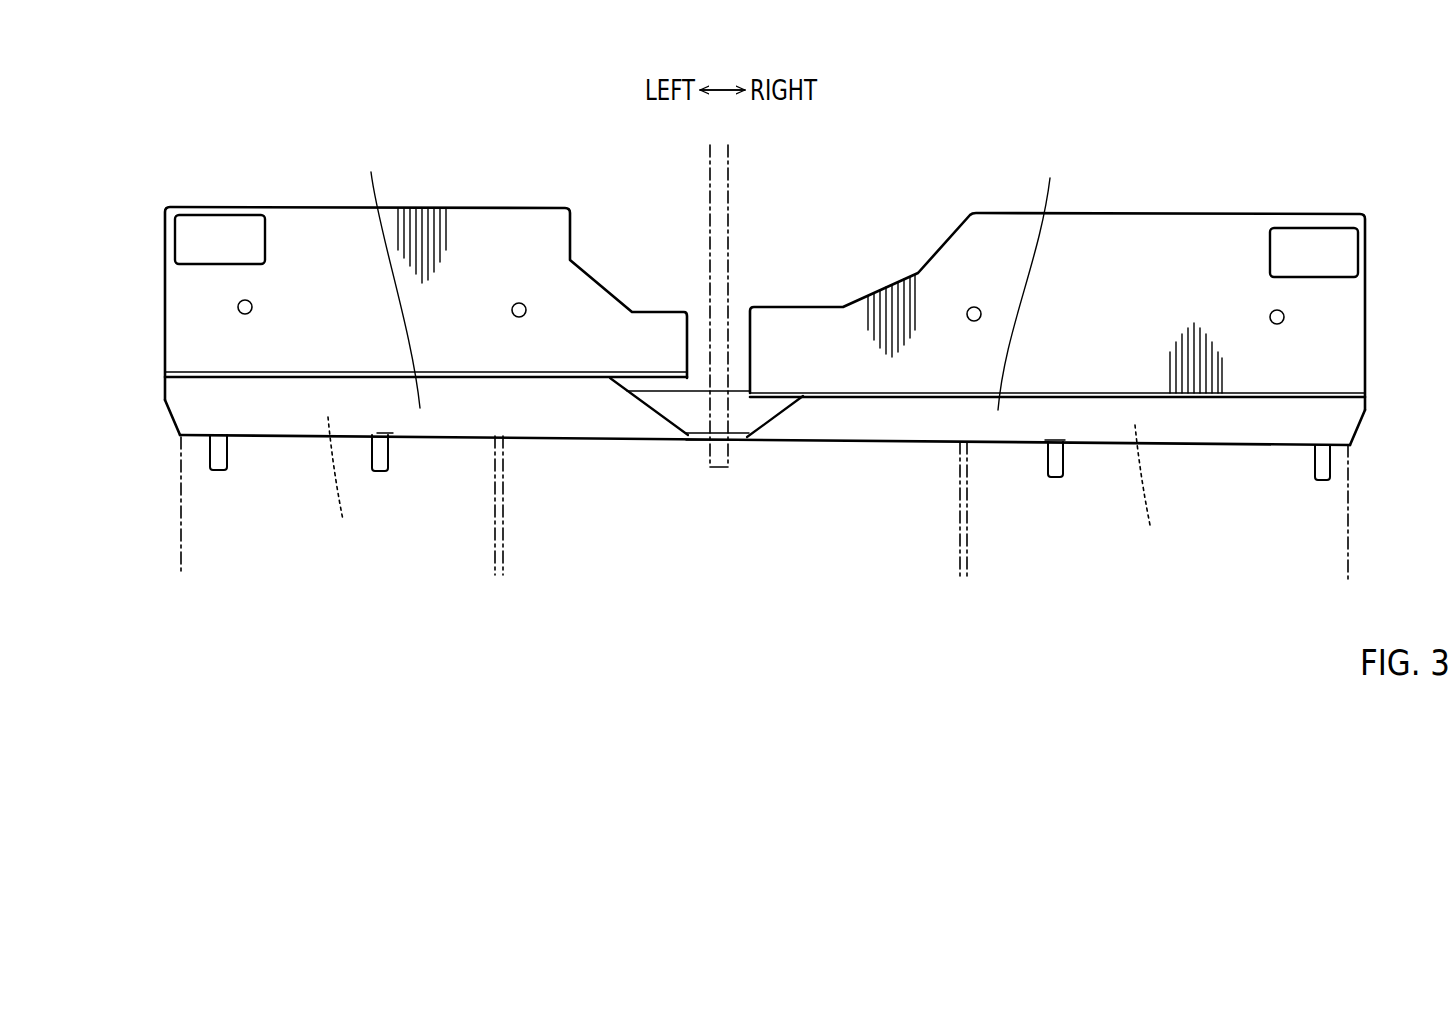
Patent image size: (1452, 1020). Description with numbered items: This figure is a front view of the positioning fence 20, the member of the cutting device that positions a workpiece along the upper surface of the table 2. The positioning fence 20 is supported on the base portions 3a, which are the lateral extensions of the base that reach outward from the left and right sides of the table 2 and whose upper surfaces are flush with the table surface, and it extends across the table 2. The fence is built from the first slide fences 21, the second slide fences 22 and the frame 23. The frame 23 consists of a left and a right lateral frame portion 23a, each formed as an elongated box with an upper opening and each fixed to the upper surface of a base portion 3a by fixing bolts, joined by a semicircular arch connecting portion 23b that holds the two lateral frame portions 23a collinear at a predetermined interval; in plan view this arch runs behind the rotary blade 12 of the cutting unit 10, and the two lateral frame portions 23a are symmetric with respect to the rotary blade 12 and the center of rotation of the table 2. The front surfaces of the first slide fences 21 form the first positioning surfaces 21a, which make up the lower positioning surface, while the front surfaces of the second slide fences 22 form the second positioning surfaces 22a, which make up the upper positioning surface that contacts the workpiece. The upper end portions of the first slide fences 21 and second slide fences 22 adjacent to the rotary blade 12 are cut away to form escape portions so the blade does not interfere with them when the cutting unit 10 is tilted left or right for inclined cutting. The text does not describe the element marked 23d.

The table 2 is at (815, 533).
The base portions 3a is at (200, 535).
The cutting unit 10 is at (730, 237).
The rotary blade 12 is at (777, 306).
The positioning fence 20 is at (986, 148).
The first slide fences 21 is at (285, 405).
The first positioning surfaces 21a is at (710, 275).
The second slide fences 22 is at (468, 205).
The second positioning surfaces 22a is at (295, 238).
The frame 23 is at (743, 395).
The lateral frame portions 23a is at (749, 498).
The semicircular arch connecting portion 23b is at (767, 328).
The mounting leg 23d is at (228, 452).